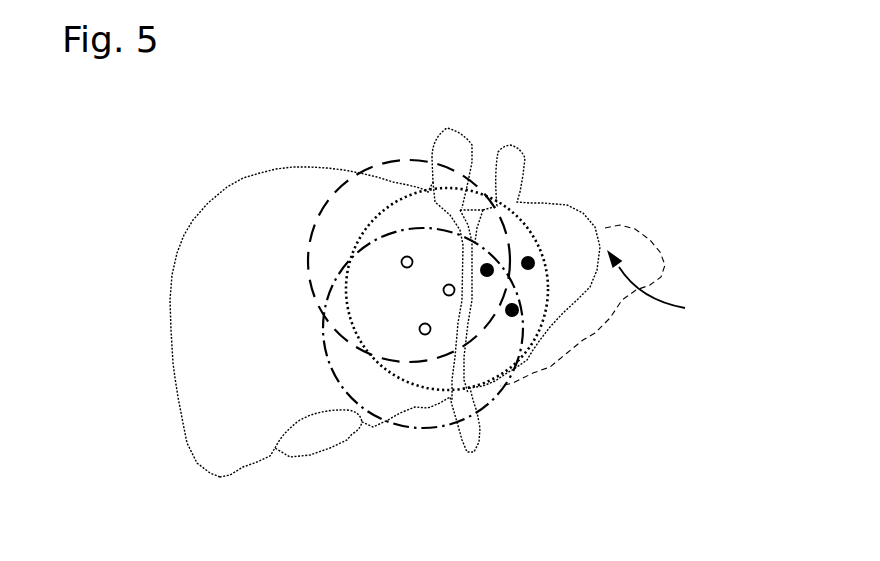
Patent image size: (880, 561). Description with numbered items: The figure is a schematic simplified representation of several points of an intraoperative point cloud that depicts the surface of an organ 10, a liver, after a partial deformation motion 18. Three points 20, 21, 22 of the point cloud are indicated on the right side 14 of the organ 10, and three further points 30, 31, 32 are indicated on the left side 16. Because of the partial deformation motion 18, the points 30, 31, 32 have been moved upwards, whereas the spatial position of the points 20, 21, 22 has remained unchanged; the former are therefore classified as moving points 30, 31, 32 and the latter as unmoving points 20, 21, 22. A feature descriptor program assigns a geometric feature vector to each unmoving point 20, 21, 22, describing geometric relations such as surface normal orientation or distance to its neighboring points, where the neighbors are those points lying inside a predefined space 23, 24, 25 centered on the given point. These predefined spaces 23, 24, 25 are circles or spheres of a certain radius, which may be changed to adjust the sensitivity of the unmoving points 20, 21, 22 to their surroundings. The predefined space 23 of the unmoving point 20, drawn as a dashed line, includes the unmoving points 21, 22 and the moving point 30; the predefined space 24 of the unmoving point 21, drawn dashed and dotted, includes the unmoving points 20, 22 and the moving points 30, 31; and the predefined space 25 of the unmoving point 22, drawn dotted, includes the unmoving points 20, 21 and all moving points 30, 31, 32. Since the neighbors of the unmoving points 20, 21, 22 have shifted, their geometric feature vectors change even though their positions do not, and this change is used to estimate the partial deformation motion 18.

The organ 10 is at (142, 213).
The right side 14 is at (222, 338).
The left side 16 is at (535, 231).
The partial deformation motion 18 is at (675, 293).
The unmoving point 20 is at (405, 255).
The unmoving point 21 is at (419, 330).
The unmoving point 22 is at (446, 297).
The predefined space 23 is at (421, 160).
The predefined space 24 is at (488, 403).
The predefined space 25 is at (581, 243).
The moving point 30 is at (488, 262).
The moving point 31 is at (522, 315).
The moving point 32 is at (540, 264).